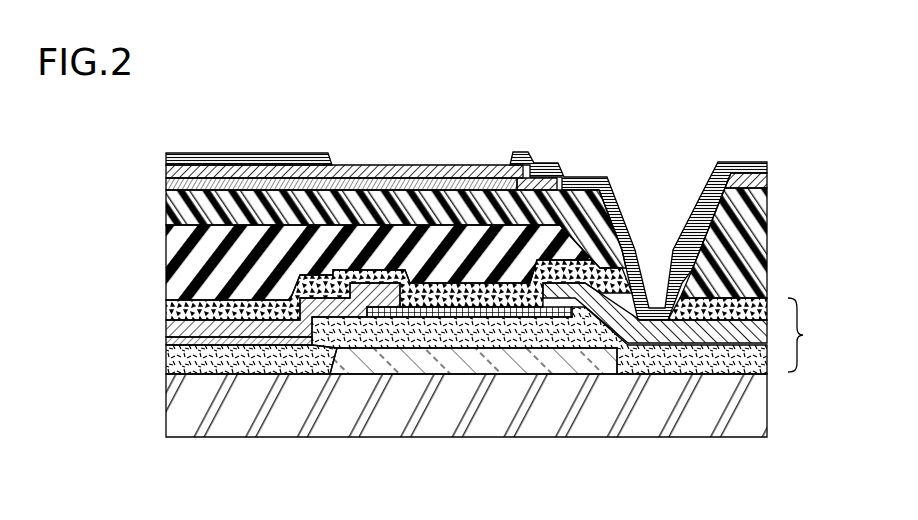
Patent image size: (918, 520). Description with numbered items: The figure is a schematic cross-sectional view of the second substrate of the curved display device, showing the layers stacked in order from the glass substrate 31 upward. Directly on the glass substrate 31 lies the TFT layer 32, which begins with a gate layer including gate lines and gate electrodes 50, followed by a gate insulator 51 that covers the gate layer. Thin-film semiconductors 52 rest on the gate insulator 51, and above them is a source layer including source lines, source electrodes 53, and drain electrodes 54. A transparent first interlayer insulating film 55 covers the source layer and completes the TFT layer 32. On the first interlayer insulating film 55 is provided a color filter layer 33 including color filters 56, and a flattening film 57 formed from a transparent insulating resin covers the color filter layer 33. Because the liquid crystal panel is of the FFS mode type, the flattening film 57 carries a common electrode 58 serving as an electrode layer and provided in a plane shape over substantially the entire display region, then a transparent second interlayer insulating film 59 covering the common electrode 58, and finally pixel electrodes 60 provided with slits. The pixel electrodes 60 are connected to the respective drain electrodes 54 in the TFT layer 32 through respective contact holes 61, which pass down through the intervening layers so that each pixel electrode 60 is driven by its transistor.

The glass substrate 31 is at (755, 400).
The TFT layer 32 is at (812, 335).
The color filter layer 33 is at (401, 244).
The gate electrodes 50 is at (262, 375).
The gate insulator 51 is at (173, 362).
The thin-film semiconductors 52 is at (166, 341).
The source electrodes 53 is at (173, 328).
The drain electrodes 54 is at (686, 340).
The first interlayer insulating film 55 is at (173, 310).
The color filters 56 is at (185, 262).
The flattening film 57 is at (172, 210).
The common electrode 58 is at (166, 183).
The second interlayer insulating film 59 is at (166, 172).
The pixel electrodes 60 is at (743, 162).
The contact holes 61 is at (654, 186).